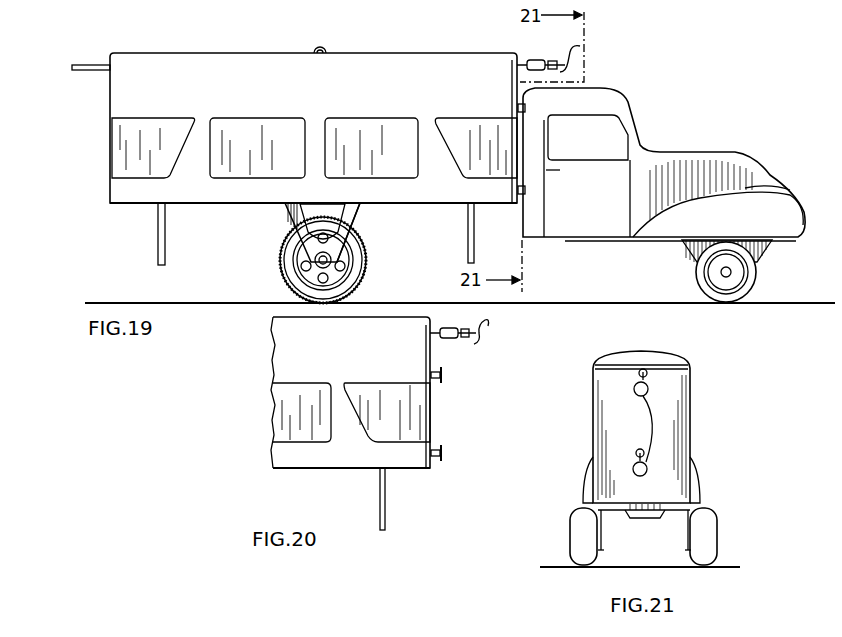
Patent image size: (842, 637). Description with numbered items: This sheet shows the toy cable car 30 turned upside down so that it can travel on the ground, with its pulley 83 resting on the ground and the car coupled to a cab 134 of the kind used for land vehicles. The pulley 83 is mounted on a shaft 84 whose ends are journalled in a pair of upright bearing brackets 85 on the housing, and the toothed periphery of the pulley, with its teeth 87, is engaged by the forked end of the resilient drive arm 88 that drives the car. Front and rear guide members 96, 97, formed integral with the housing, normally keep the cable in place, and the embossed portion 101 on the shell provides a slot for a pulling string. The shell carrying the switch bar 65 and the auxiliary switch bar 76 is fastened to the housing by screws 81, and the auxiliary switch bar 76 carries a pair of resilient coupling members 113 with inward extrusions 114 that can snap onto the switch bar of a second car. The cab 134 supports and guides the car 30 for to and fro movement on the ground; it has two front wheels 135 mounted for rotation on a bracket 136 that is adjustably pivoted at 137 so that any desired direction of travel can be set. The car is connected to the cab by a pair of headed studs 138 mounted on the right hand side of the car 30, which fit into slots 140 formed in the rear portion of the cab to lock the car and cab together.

In FIG. 19, the cable car 30 is at (402, 48).
In FIG. 20, the cable car 30 is at (258, 362).
In FIG. 19, the switch bar 65 is at (100, 66).
In FIG. 19, the embossed portion 101 is at (324, 47).
In FIG. 19, the screws 81 is at (110, 201).
In FIG. 20, the screws 81 is at (436, 468).
In FIG. 19, the rear guide member 97 is at (166, 243).
In FIG. 19, the front guide member 96 is at (466, 230).
In FIG. 20, the front guide member 96 is at (386, 512).
In FIG. 19, the bearing brackets 85 is at (292, 215).
In FIG. 19, the drive arm 88 is at (355, 229).
In FIG. 19, the shaft 84 is at (316, 261).
In FIG. 19, the pulley 83 is at (355, 265).
In FIG. 19, the teeth 87 is at (362, 290).
In FIG. 19, the auxiliary switch bar 76 is at (530, 60).
In FIG. 20, the auxiliary switch bar 76 is at (440, 330).
In FIG. 19, the extrusions 114 is at (556, 53).
In FIG. 20, the extrusions 114 is at (467, 338).
In FIG. 19, the coupling members 113 is at (575, 50).
In FIG. 20, the coupling members 113 is at (482, 331).
In FIG. 19, the headed studs 138 is at (526, 110).
In FIG. 20, the headed studs 138 is at (444, 378).
In FIG. 21, the headed studs 138 is at (638, 378).
In FIG. 19, the cab 134 is at (638, 133).
In FIG. 21, the cab 134 is at (690, 374).
In FIG. 19, the front wheels 135 is at (755, 279).
In FIG. 21, the front wheels 135 is at (698, 556).
In FIG. 19, the bracket 136 is at (772, 253).
In FIG. 21, the bracket 136 is at (607, 511).
In FIG. 21, the pivot 137 is at (667, 492).
In FIG. 21, the slots 140 is at (652, 447).